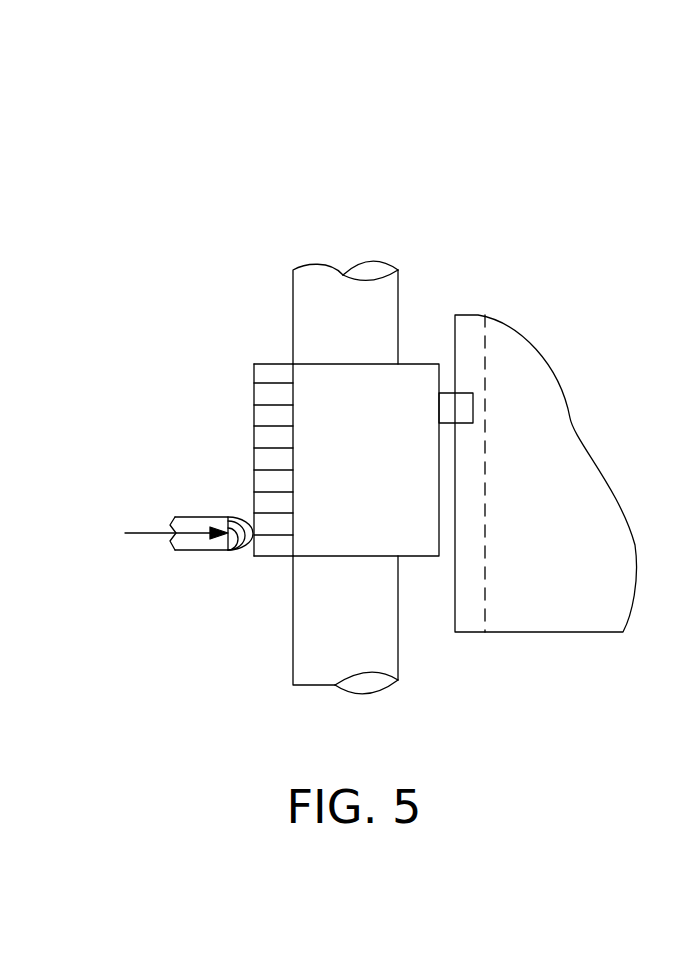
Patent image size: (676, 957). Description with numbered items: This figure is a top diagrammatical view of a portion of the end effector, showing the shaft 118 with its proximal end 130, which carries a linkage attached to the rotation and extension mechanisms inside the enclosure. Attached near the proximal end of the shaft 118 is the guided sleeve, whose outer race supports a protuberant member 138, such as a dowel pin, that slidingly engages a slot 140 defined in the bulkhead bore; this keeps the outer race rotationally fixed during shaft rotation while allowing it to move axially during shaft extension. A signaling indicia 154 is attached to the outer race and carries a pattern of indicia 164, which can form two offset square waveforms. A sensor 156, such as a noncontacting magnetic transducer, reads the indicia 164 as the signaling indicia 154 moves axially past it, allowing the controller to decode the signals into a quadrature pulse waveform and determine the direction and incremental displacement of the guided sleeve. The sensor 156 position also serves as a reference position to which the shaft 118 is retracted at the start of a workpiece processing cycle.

The shaft 118 is at (398, 632).
The proximal end 130 is at (293, 293).
The protuberant member 138 is at (473, 412).
The slot 140 is at (459, 292).
The signaling indicia 154 is at (254, 364).
The sensor 156 is at (231, 551).
The pattern of indicia 164 is at (254, 405).